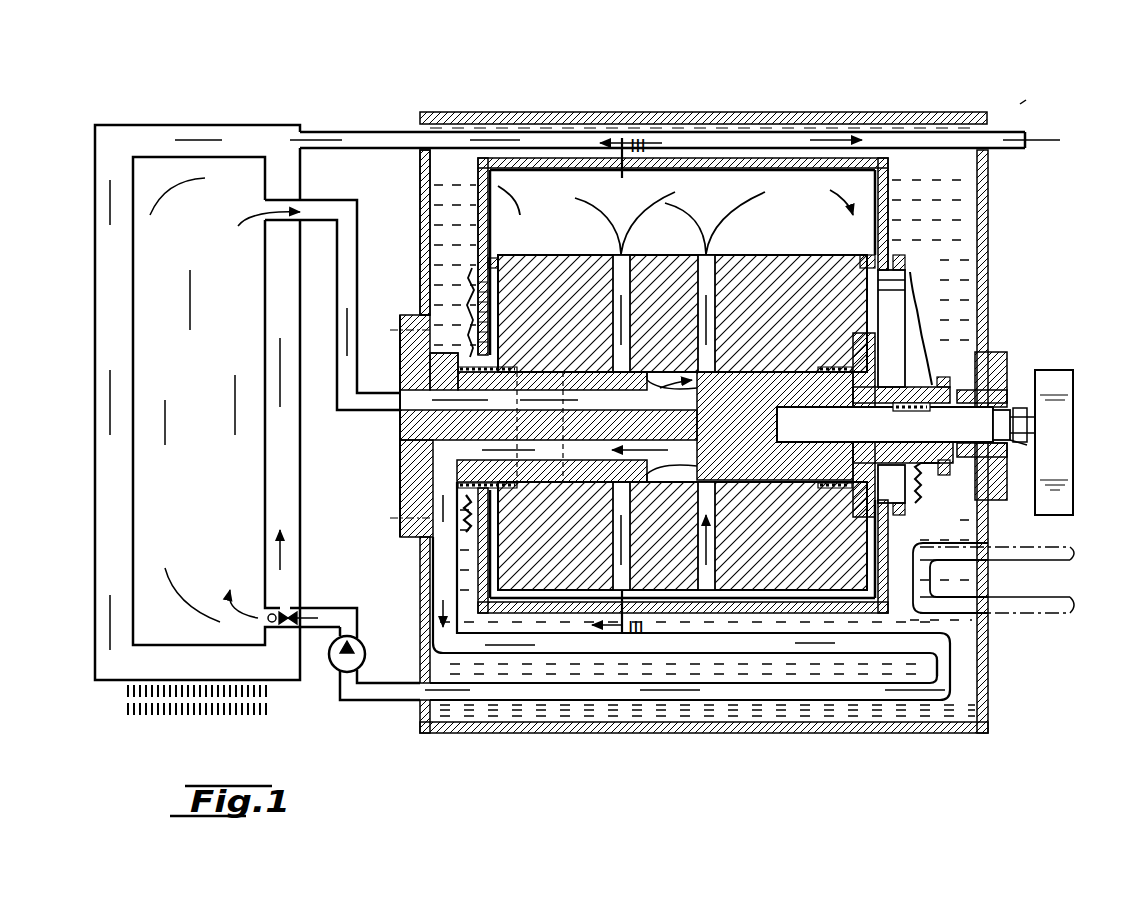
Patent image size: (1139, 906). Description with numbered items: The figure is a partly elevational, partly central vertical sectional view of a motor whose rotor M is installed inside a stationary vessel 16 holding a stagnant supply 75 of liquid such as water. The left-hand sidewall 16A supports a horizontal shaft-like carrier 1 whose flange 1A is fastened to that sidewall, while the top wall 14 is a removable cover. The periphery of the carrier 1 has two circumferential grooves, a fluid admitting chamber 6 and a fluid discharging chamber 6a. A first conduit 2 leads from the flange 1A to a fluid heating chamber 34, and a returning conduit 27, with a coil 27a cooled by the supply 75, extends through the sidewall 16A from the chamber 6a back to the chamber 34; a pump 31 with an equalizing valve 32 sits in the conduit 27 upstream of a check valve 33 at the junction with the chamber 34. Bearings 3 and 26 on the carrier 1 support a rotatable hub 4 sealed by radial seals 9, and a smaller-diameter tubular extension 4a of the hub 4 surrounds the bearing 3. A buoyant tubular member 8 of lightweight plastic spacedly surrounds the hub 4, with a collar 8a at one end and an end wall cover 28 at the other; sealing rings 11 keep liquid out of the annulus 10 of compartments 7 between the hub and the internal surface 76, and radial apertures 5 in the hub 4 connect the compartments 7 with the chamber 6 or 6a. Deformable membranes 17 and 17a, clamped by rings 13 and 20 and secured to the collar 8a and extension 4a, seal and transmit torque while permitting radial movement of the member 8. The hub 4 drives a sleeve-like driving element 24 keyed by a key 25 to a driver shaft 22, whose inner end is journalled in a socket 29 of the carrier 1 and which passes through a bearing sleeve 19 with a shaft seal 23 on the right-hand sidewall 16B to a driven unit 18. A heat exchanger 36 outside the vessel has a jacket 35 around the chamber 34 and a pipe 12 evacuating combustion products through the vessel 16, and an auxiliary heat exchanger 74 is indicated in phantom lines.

The carrier 1 is at (407, 472).
The flange 1A is at (402, 497).
The first conduit 2 is at (393, 408).
The bearing 3 is at (505, 368).
The hub 4 is at (778, 298).
The tubular extension 4a is at (470, 352).
The apertures 5 is at (632, 257).
The fluid admitting chamber 6 is at (657, 374).
The fluid discharging chamber 6a is at (665, 482).
The compartments 7 is at (805, 190).
The tubular buoyant member 8 is at (533, 158).
The collar 8a is at (478, 194).
The radial seals 9 is at (563, 372).
The annulus 10 is at (874, 218).
The sealing rings 11 is at (497, 262).
The pipe 12 is at (938, 136).
The clamping ring 13 is at (906, 258).
The top wall 14 is at (612, 112).
The vessel 16 is at (992, 250).
The left-hand sidewall 16A is at (420, 238).
The right-hand sidewall 16B is at (990, 698).
The deformable annular membrane 17 is at (920, 304).
The deformable annular membrane 17a is at (470, 290).
The driven unit 18 is at (1065, 392).
The bearing sleeve 19 is at (1010, 378).
The clamping ring 20 is at (943, 377).
The driver shaft 22 is at (1030, 418).
The shaft seal 23 is at (1030, 447).
The driving element 24 is at (936, 472).
The key 25 is at (882, 418).
The bearing 26 is at (826, 372).
The fluid returning conduit 27 is at (420, 592).
The coil 27a is at (950, 666).
The end wall cover 28 is at (889, 190).
The socket 29 is at (775, 433).
The pump 31 is at (337, 662).
The equalizing valve 32 is at (366, 653).
The check valve 33 is at (283, 606).
The fluid heating chamber 34 is at (240, 528).
The jacket 35 is at (118, 668).
The heat exchanger 36 is at (202, 122).
The auxiliary heat exchanger 74 is at (1045, 560).
The supply of liquid 75 is at (928, 712).
The internal surface 76 is at (730, 180).
The rotor M is at (1024, 102).